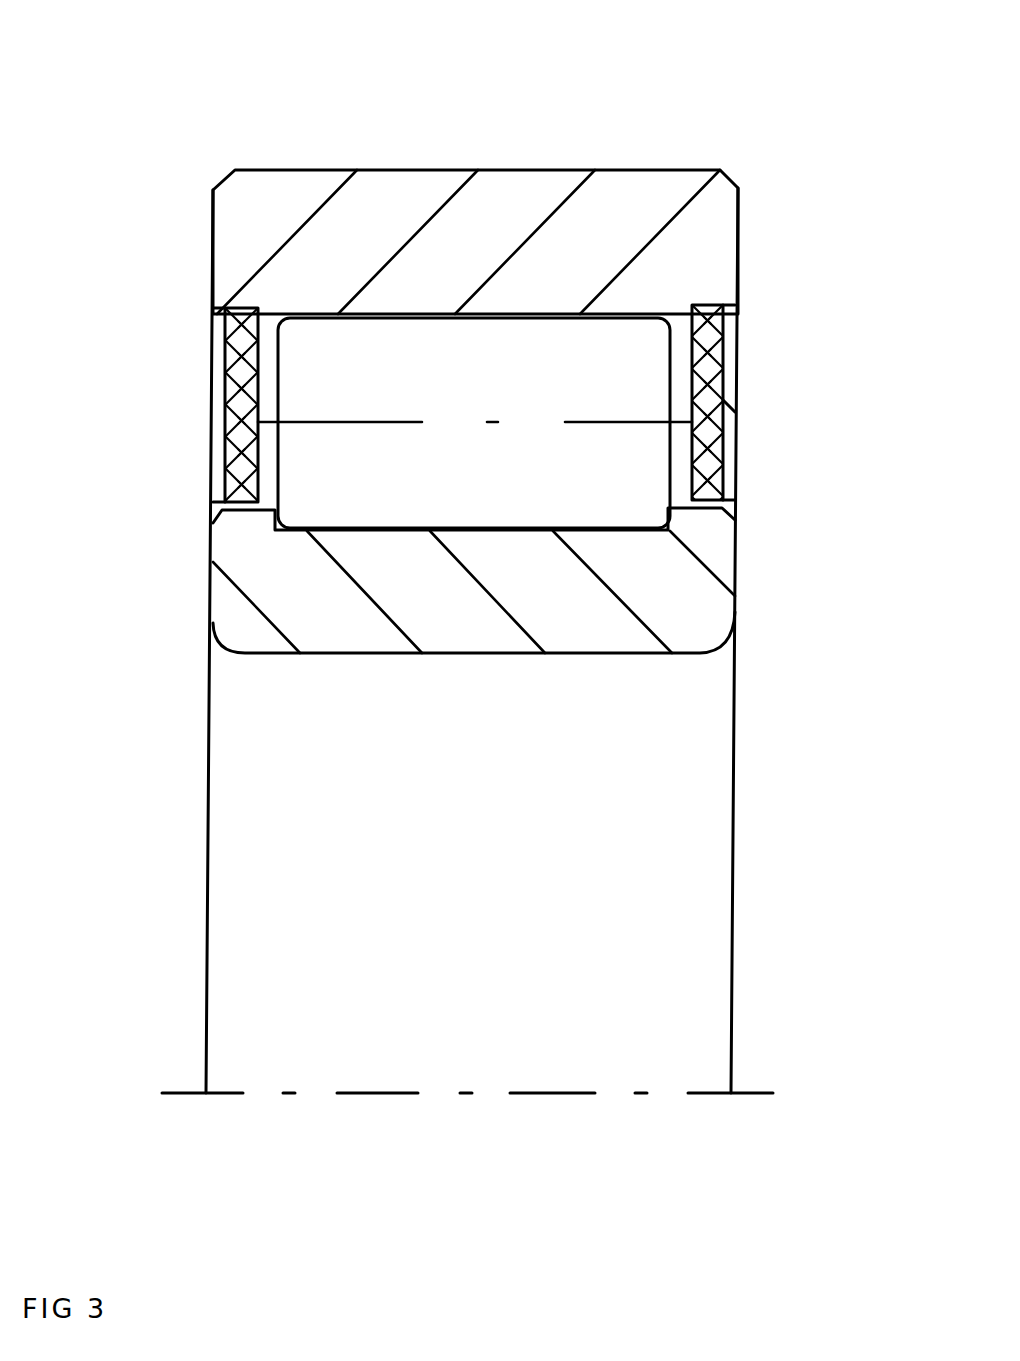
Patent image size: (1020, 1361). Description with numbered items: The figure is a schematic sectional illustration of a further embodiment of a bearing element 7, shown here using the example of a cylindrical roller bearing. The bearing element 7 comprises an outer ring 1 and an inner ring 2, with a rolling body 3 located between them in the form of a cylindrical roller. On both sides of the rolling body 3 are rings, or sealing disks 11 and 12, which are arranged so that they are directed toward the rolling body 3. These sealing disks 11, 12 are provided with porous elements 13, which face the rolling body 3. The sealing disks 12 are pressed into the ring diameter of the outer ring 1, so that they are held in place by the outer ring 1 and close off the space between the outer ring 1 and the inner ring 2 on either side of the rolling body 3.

The outer ring 1 is at (640, 190).
The inner ring 2 is at (708, 614).
The rolling body 3 is at (432, 347).
The bearing element 7 is at (560, 74).
The sealing disk 11 is at (212, 382).
The sealing disk 12 is at (741, 347).
The porous element 13 is at (215, 428).